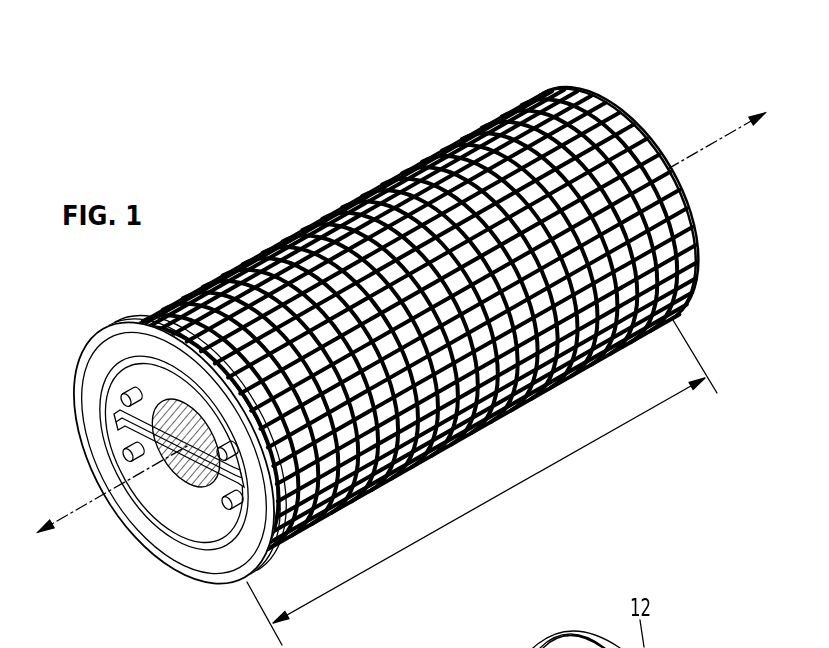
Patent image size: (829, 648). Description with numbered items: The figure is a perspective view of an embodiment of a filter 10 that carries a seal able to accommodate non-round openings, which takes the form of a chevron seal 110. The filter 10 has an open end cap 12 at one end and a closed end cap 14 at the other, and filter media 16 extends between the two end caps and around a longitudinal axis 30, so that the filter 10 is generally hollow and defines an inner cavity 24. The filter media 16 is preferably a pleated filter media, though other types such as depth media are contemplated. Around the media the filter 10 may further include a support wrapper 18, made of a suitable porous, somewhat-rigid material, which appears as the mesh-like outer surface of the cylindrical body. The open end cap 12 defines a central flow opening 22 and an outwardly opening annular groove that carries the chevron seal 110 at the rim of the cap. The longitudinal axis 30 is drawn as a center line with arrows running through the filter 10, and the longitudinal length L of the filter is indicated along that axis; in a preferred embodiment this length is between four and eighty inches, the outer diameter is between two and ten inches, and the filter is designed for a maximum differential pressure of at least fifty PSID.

The filter 10 is at (206, 68).
The open end cap 12 is at (86, 391).
The closed end cap 14 is at (613, 103).
The filter media 16 is at (330, 205).
The support wrapper 18 is at (597, 358).
The central flow opening 22 is at (137, 360).
The inner cavity 24 is at (172, 483).
The longitudinal axis 30 is at (726, 131).
The chevron seal 110 is at (150, 325).
The longitudinal length L is at (647, 408).